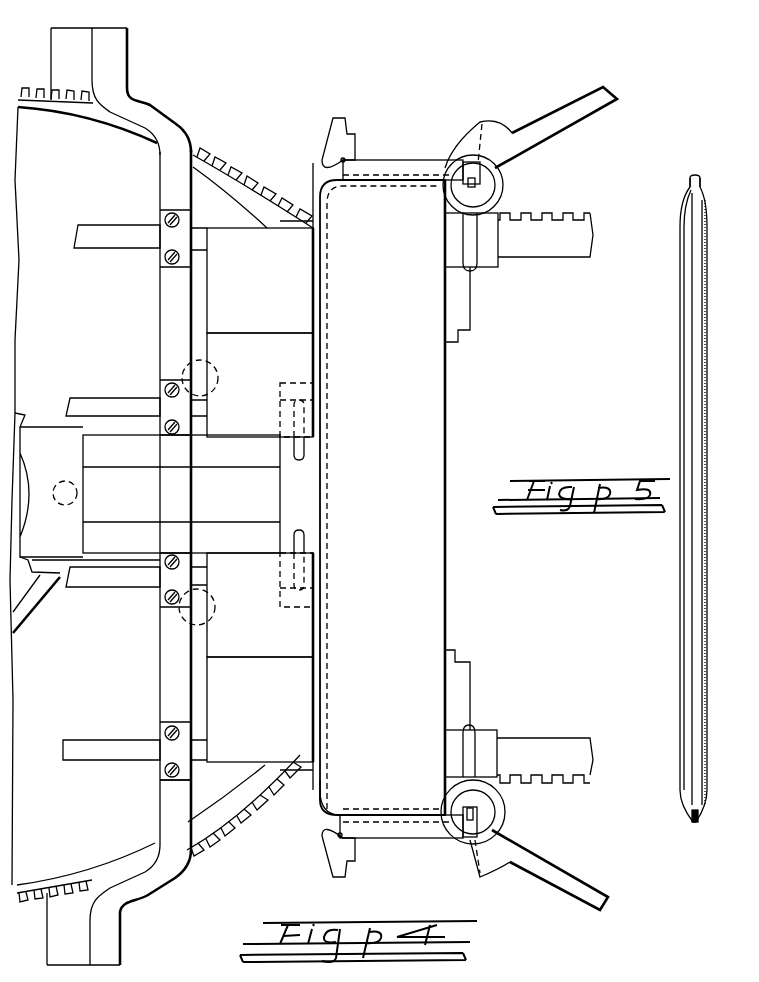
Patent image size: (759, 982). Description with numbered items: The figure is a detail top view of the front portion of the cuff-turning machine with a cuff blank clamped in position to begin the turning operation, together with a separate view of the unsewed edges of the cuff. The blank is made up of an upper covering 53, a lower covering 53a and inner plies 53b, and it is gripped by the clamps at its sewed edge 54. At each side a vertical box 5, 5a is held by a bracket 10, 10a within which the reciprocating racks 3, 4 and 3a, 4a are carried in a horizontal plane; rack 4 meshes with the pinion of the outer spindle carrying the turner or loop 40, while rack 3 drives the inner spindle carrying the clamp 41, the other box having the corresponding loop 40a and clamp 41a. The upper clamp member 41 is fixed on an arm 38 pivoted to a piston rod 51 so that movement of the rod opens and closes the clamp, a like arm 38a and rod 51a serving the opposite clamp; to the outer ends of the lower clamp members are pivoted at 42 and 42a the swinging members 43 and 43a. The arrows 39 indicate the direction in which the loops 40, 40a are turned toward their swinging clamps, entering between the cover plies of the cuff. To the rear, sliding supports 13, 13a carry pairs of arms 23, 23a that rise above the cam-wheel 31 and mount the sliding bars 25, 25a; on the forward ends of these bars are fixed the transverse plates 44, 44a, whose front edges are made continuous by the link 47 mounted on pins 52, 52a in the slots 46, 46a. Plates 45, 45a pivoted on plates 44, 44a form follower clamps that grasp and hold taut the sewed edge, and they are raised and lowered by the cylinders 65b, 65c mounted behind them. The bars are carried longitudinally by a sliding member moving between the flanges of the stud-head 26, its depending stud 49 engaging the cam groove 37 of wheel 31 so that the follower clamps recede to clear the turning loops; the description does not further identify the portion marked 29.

In FIG. 4, the reciprocating rack 3 is at (373, 481).
In FIG. 4, the reciprocating rack 3a is at (307, 783).
In FIG. 4, the reciprocating rack 4 is at (570, 215).
In FIG. 4, the reciprocating rack 4a is at (530, 745).
In FIG. 4, the vertical box 5 is at (460, 150).
In FIG. 4, the vertical box 5a is at (502, 828).
In FIG. 4, the bracket 10 is at (487, 258).
In FIG. 4, the bracket 10a is at (487, 740).
In FIG. 4, the sliding support or bracket 13 is at (60, 48).
In FIG. 4, the sliding support or bracket 13a is at (72, 935).
In FIG. 4, the arms 23 is at (178, 172).
In FIG. 4, the arms 23a is at (170, 857).
In FIG. 4, the sliding bar 25 is at (92, 403).
In FIG. 4, the sliding bar 25a is at (100, 752).
In FIG. 4, the stud-head 26 is at (110, 548).
In FIG. 4, the body section 29 is at (37, 433).
In FIG. 4, the cam-wheel 31 is at (237, 187).
In FIG. 4, the cam groove 37 is at (20, 590).
In FIG. 4, the arm 38 is at (480, 181).
In FIG. 4, the lower hinge disc 38a is at (480, 813).
In FIG. 4, the arrows 39 is at (549, 66).
In FIG. 4, the turner 40 is at (548, 120).
In FIG. 4, the loop 40a is at (565, 878).
In FIG. 4, the upper member of the clamp 41 is at (387, 165).
In FIG. 4, the clamp 41a is at (418, 832).
In FIG. 4, the pivot 42 is at (345, 160).
In FIG. 4, the pivot 42a is at (345, 838).
In FIG. 4, the swinging member 43 is at (337, 143).
In FIG. 4, the swinging member 43a is at (338, 862).
In FIG. 4, the plate 44 is at (265, 240).
In FIG. 4, the plate 44a is at (273, 750).
In FIG. 4, the plate 45 is at (318, 358).
In FIG. 4, the plate 45a is at (318, 620).
In FIG. 4, the slot 46 is at (305, 444).
In FIG. 4, the slot 46a is at (305, 540).
In FIG. 4, the link 47 is at (285, 483).
In FIG. 4, the depending stud 49 is at (77, 493).
In FIG. 4, the piston rod 51 is at (522, 193).
In FIG. 4, the lower spring pin 51a is at (481, 818).
In FIG. 4, the pin 52 is at (305, 418).
In FIG. 4, the pin 52a is at (305, 560).
In FIG. 4, the upper covering 53 is at (440, 615).
In FIG. 5, the upper covering 53 is at (680, 597).
In FIG. 5, the lower covering 53a is at (699, 630).
In FIG. 5, the inner plies 53b is at (703, 660).
In FIG. 4, the sewed edge 54 is at (318, 817).
In FIG. 5, the sewed edge 54 is at (690, 812).
In FIG. 4, the cylinder 65b is at (183, 374).
In FIG. 4, the cylinder 65c is at (183, 617).